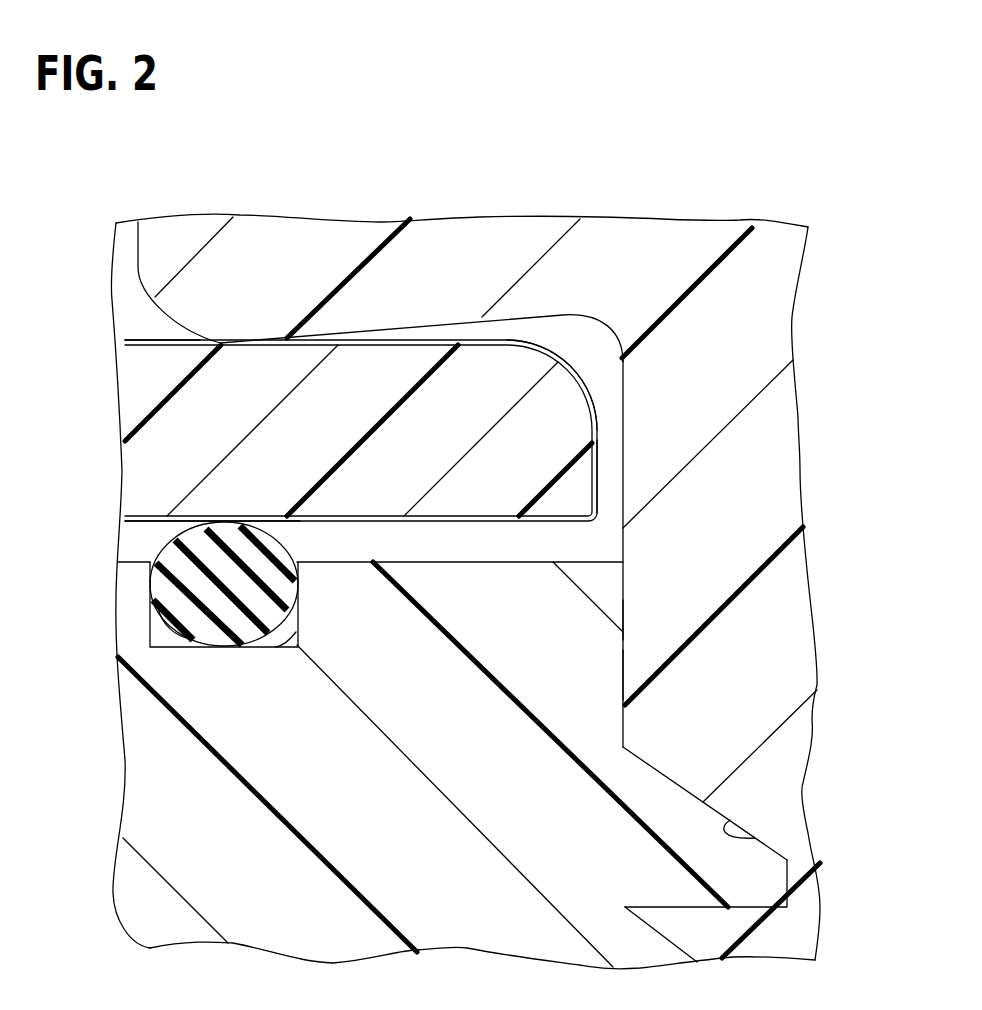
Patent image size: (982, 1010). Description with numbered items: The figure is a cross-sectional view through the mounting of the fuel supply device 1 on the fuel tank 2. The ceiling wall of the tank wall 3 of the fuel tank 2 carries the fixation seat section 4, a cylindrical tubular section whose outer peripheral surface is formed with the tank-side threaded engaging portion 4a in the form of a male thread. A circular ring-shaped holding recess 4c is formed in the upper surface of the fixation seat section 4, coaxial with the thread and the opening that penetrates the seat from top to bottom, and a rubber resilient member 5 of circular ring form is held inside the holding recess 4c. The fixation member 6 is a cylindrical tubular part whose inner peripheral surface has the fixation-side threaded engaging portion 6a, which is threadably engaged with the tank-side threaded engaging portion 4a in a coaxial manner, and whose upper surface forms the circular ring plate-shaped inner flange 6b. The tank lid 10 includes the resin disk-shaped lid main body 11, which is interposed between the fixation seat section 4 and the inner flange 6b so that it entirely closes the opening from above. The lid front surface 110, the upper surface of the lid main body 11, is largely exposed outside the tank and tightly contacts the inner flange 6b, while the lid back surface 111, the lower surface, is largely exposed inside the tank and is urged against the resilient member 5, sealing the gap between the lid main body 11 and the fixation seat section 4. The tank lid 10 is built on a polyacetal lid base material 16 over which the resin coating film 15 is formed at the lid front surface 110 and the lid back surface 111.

The fuel supply device 1 is at (790, 875).
The fuel tank 2 is at (627, 672).
The tank wall 3 is at (625, 620).
The fixation seat section 4 is at (162, 656).
The tank-side threaded engaging portion 4a is at (700, 798).
The holding recess 4c is at (280, 647).
The resilient member 5 is at (227, 620).
The fixation member 6 is at (134, 248).
The fixation-side threaded engaging portion 6a is at (755, 838).
The inner flange 6b is at (418, 245).
The tank lid 10 is at (597, 522).
The lid main body 11 is at (598, 474).
The resin coating film 15 is at (598, 422).
The lid base material 16 is at (137, 477).
The lid front surface 110 is at (500, 337).
The lid back surface 111 is at (148, 527).